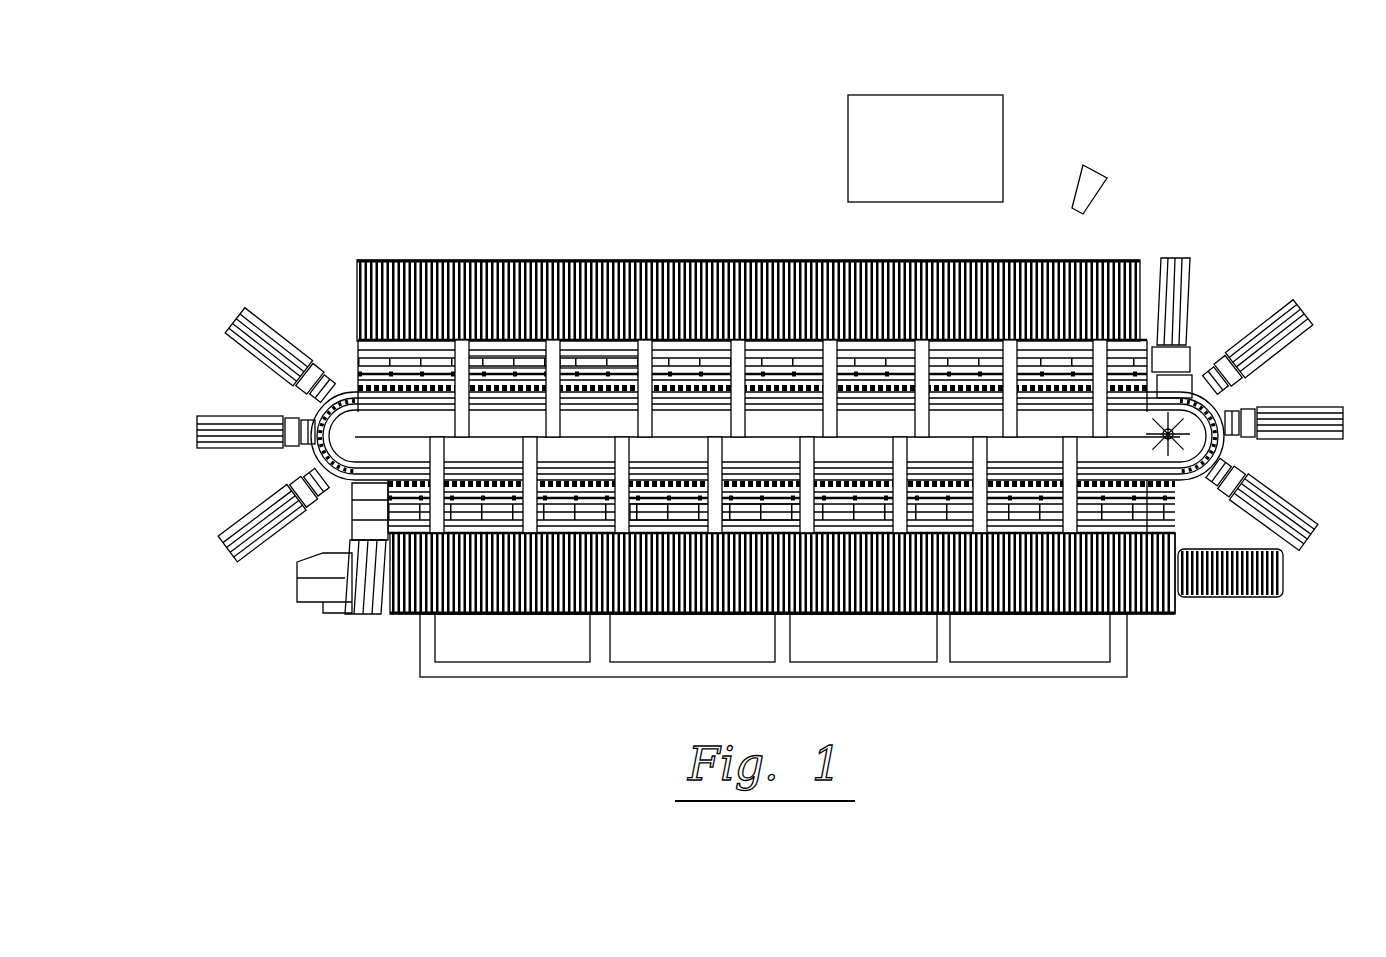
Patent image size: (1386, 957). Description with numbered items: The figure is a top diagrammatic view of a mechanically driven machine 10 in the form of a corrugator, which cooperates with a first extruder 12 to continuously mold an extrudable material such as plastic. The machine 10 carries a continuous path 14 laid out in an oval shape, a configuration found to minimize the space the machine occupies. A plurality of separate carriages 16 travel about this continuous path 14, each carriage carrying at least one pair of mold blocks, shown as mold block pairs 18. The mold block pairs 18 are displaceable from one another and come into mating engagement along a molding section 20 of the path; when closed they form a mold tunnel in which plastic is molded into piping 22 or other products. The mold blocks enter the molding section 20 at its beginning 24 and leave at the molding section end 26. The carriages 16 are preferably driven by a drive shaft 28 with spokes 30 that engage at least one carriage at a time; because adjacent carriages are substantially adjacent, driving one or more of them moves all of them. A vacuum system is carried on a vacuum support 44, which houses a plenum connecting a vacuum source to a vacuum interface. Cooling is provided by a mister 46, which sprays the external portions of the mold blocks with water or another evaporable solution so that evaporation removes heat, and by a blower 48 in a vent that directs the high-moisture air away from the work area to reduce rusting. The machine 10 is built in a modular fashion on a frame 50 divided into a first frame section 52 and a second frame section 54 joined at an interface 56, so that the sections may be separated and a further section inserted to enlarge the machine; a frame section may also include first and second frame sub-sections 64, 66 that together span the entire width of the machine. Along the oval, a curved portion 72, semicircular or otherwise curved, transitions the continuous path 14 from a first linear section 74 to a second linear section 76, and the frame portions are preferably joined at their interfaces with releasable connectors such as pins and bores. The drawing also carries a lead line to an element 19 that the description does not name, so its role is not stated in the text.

The machine 10 is at (350, 126).
The first extruder 12 is at (330, 578).
The continuous path 14 is at (322, 456).
The carriages 16 is at (350, 450).
The mold block pairs 18 is at (243, 520).
The pallet bank 19 is at (633, 262).
The molding section 20 is at (833, 617).
The piping 22 is at (1233, 600).
The beginning 24 is at (390, 618).
The molding section end 26 is at (1177, 612).
The drive shaft 28 is at (1160, 438).
The spokes 30 is at (1172, 492).
The vacuum support 44 is at (830, 678).
The mister 46 is at (1093, 190).
The blower 48 is at (938, 145).
The frame 50 is at (945, 553).
The first frame section 52 is at (767, 391).
The second frame section 54 is at (752, 415).
The interface 56 is at (782, 452).
The first frame sub-section 64 is at (612, 402).
The second frame sub-section 66 is at (671, 480).
The curved portion 72 is at (318, 413).
The first linear section 74 is at (522, 465).
The second linear section 76 is at (480, 398).